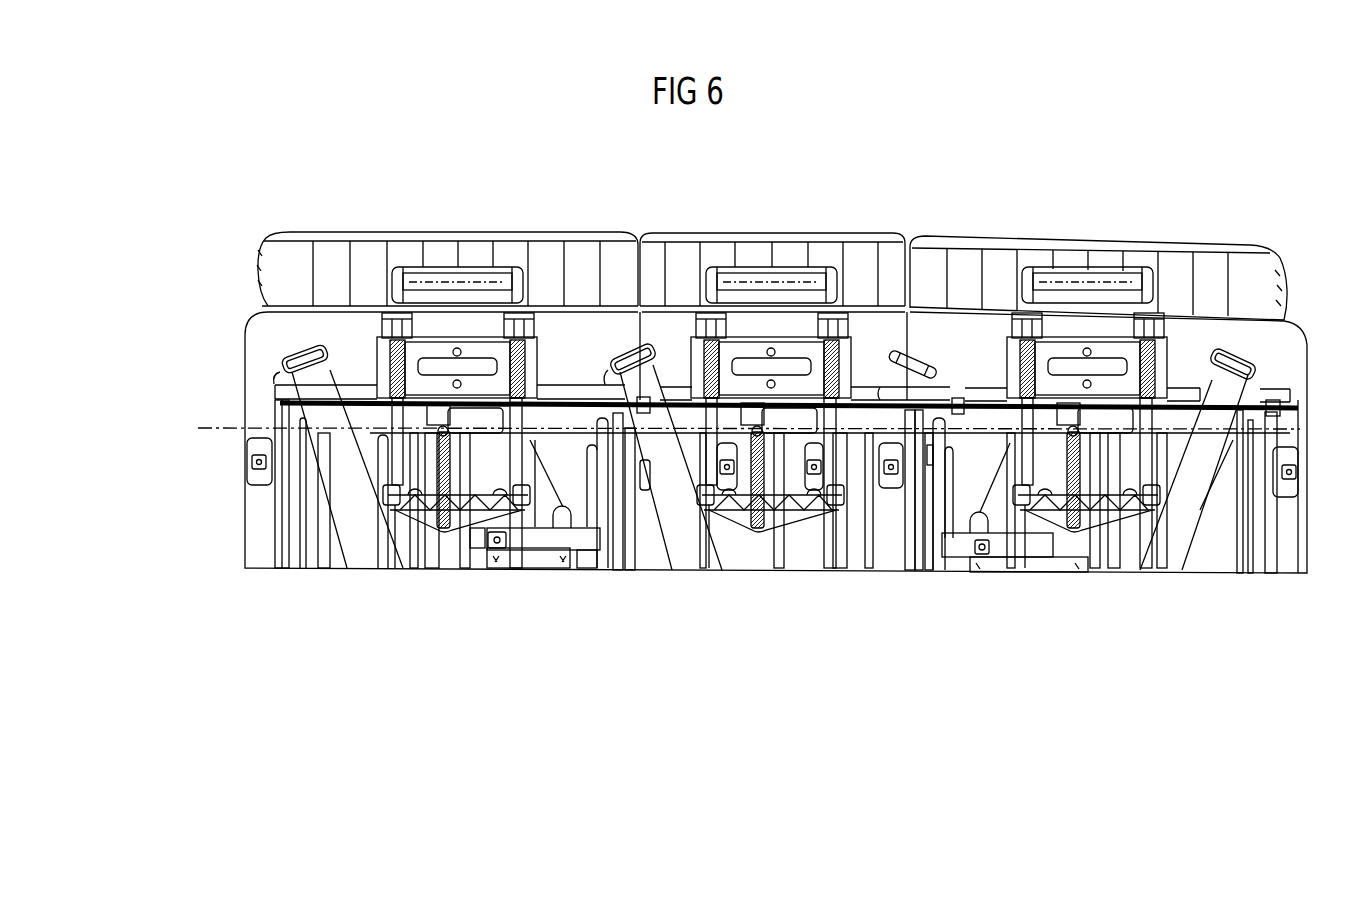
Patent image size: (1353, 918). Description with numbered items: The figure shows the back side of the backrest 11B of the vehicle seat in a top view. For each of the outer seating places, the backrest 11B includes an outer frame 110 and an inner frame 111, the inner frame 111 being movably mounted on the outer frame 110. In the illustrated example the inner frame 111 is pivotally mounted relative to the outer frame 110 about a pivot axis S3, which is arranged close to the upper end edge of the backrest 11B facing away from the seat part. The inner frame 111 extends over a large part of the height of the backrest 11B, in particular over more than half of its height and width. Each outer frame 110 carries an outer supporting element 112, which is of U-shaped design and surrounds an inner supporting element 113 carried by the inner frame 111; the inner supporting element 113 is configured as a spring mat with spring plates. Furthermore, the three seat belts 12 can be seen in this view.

The backrest 11B is at (218, 357).
The pivot axis S3 is at (222, 427).
The outer supporting element 112 is at (248, 493).
The outer frame 110 is at (281, 523).
The inner frame 111 is at (308, 568).
The seat belt 12 is at (374, 568).
The inner supporting element 113 is at (434, 568).